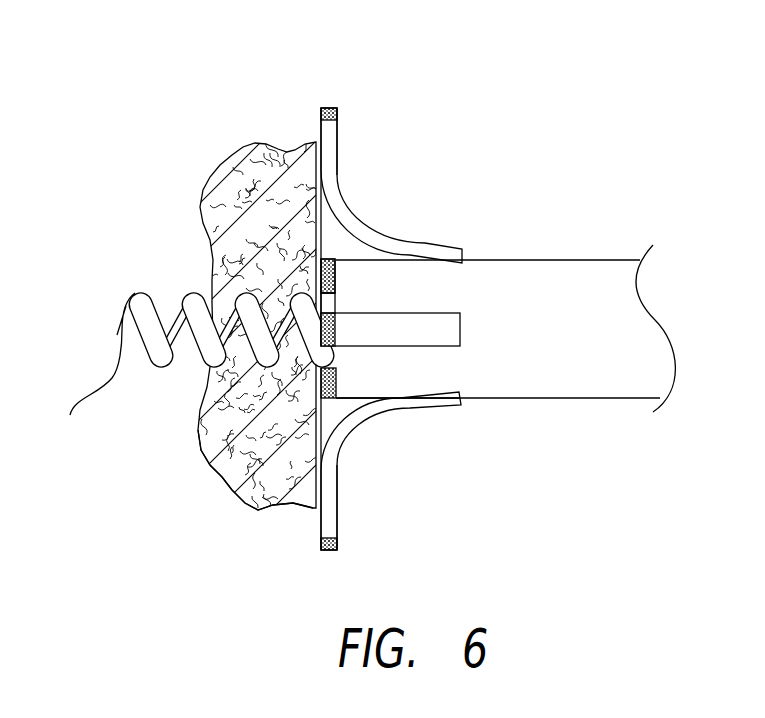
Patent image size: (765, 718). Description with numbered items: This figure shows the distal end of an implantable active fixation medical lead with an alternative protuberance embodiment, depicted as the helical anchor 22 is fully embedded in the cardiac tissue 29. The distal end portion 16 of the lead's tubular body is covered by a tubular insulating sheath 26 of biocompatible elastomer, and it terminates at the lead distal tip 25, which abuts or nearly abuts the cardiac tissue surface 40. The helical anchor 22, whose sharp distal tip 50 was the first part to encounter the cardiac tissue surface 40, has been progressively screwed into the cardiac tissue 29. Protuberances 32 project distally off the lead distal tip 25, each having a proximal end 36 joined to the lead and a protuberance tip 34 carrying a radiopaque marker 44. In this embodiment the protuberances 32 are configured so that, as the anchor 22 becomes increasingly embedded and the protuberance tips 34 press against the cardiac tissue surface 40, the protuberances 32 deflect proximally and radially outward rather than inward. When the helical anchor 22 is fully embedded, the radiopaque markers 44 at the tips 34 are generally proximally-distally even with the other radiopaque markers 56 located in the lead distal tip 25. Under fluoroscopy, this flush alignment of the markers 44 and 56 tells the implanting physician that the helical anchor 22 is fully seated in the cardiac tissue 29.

The distal end portion 16 is at (597, 158).
The helical anchor 22 is at (165, 367).
The distal tip 25 is at (208, 458).
The tubular insulating sheath 26 is at (623, 398).
The cardiac tissue 29 is at (253, 180).
The protuberance 32 is at (352, 218).
The protuberance tip 34 is at (325, 107).
The proximal end 36 is at (462, 313).
The cardiac tissue surface 40 is at (302, 468).
The radiopaque marker 44 is at (333, 107).
The sharp distal tip 50 is at (173, 374).
The radiopaque marker 56 is at (320, 275).